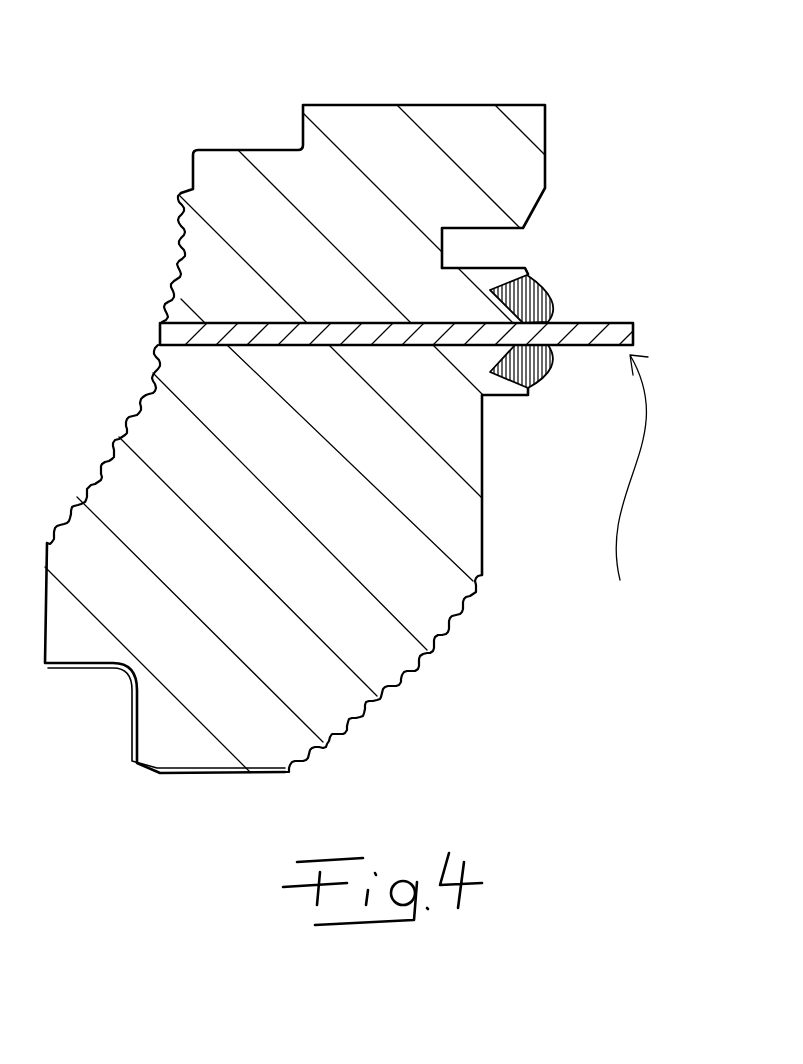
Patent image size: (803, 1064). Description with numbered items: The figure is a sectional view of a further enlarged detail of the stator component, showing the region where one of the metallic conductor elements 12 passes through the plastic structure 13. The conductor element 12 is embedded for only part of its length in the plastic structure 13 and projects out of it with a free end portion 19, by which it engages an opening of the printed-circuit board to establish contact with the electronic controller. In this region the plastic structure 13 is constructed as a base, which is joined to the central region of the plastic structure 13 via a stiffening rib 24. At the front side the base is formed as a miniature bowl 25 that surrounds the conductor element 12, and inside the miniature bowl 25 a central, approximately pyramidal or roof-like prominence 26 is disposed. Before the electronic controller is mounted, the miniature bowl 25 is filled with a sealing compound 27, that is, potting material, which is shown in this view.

The conductor element 12 is at (332, 323).
The plastic structure 13 is at (363, 180).
The free end portion 19 is at (638, 490).
The stiffening rib 24 is at (457, 522).
The miniature bowl 25 is at (533, 297).
The prominence 26 is at (540, 367).
The sealing compound 27 is at (528, 272).